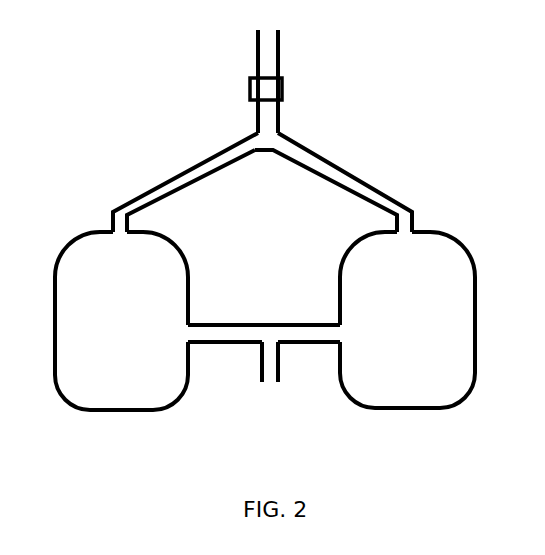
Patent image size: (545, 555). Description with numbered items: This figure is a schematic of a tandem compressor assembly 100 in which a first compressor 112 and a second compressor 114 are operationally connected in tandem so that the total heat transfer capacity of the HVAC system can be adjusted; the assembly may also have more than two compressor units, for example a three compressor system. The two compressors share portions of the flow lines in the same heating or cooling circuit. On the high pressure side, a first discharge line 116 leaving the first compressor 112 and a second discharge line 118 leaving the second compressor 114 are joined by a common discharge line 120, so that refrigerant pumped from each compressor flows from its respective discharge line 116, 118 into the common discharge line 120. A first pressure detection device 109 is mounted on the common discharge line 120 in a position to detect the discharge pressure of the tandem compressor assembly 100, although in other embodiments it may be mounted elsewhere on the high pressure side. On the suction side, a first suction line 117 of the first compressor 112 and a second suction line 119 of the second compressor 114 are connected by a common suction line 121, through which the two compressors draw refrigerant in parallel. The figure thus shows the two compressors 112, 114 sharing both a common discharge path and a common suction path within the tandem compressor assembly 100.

The tandem compressor assembly 100 is at (455, 116).
The first pressure detection device 109 is at (247, 89).
The first compressor 112 is at (137, 343).
The second compressor 114 is at (418, 349).
The first discharge line 116 is at (108, 218).
The first suction line 117 is at (207, 322).
The second discharge line 118 is at (415, 220).
The second suction line 119 is at (301, 346).
The common discharge line 120 is at (281, 57).
The common suction line 121 is at (258, 372).